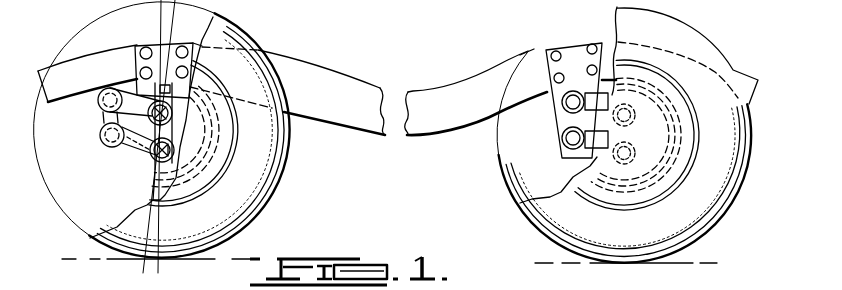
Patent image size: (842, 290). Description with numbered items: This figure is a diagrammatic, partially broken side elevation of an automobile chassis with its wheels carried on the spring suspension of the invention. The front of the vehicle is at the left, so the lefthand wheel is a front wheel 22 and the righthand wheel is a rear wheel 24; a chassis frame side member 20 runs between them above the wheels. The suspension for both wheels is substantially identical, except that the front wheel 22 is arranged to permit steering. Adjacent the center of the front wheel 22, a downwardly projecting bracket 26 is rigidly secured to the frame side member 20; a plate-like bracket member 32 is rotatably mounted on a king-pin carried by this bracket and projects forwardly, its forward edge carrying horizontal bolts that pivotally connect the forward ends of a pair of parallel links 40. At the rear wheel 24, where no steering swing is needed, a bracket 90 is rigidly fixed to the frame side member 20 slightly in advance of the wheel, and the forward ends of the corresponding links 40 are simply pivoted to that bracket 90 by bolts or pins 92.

The frame side member 20 is at (337, 85).
The front wheel 22 is at (276, 192).
The rear wheel 24 is at (535, 227).
The bracket 26 is at (140, 60).
The plate-like bracket member 32 is at (103, 114).
The parallel links 40 is at (150, 155).
The bracket 90 is at (531, 53).
The bolts or pins 92 is at (570, 105).